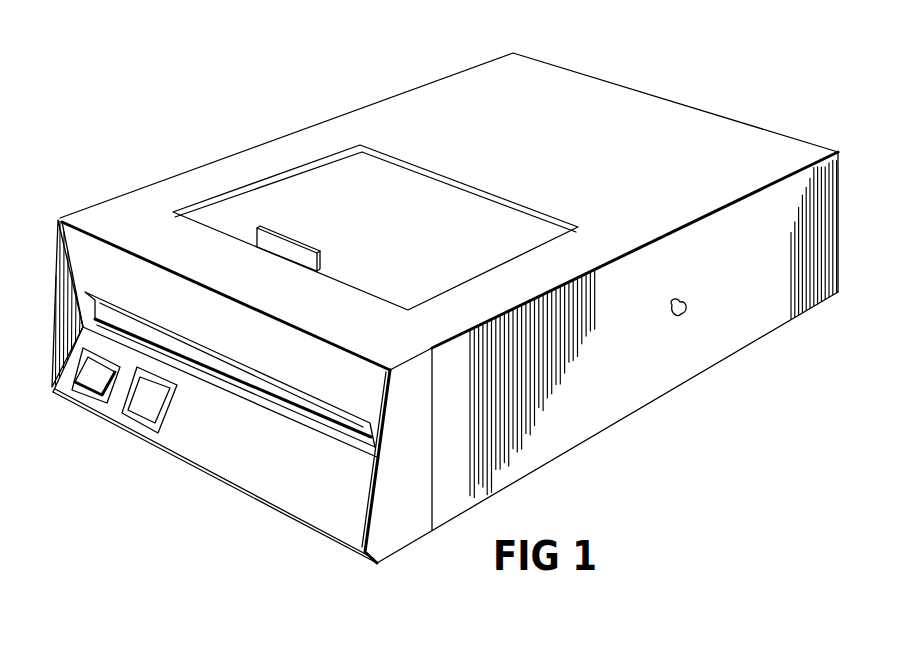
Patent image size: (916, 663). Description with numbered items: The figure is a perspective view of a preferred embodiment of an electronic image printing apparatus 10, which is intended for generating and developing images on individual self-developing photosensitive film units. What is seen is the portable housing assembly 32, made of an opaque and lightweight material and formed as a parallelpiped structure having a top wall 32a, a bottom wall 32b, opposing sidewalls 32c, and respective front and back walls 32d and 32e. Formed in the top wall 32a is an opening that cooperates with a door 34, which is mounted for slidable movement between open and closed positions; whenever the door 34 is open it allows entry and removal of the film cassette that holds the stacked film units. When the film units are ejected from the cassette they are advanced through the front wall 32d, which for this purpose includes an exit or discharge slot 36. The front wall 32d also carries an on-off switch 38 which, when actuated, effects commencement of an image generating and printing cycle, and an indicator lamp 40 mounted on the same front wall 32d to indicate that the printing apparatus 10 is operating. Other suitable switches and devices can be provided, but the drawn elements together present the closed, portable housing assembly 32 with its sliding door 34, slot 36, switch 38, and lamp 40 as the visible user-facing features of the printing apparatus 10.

The electronic image printing apparatus 10 is at (298, 118).
The portable housing assembly 32 is at (467, 78).
The top wall 32a is at (690, 122).
The bottom wall 32b is at (745, 350).
The sidewalls 32c is at (133, 192).
The front wall 32d is at (320, 504).
The back wall 32e is at (840, 212).
The door 34 is at (465, 218).
The exit or discharge slot 36 is at (297, 407).
The on-off switch 38 is at (88, 375).
The indicator lamp 40 is at (147, 407).